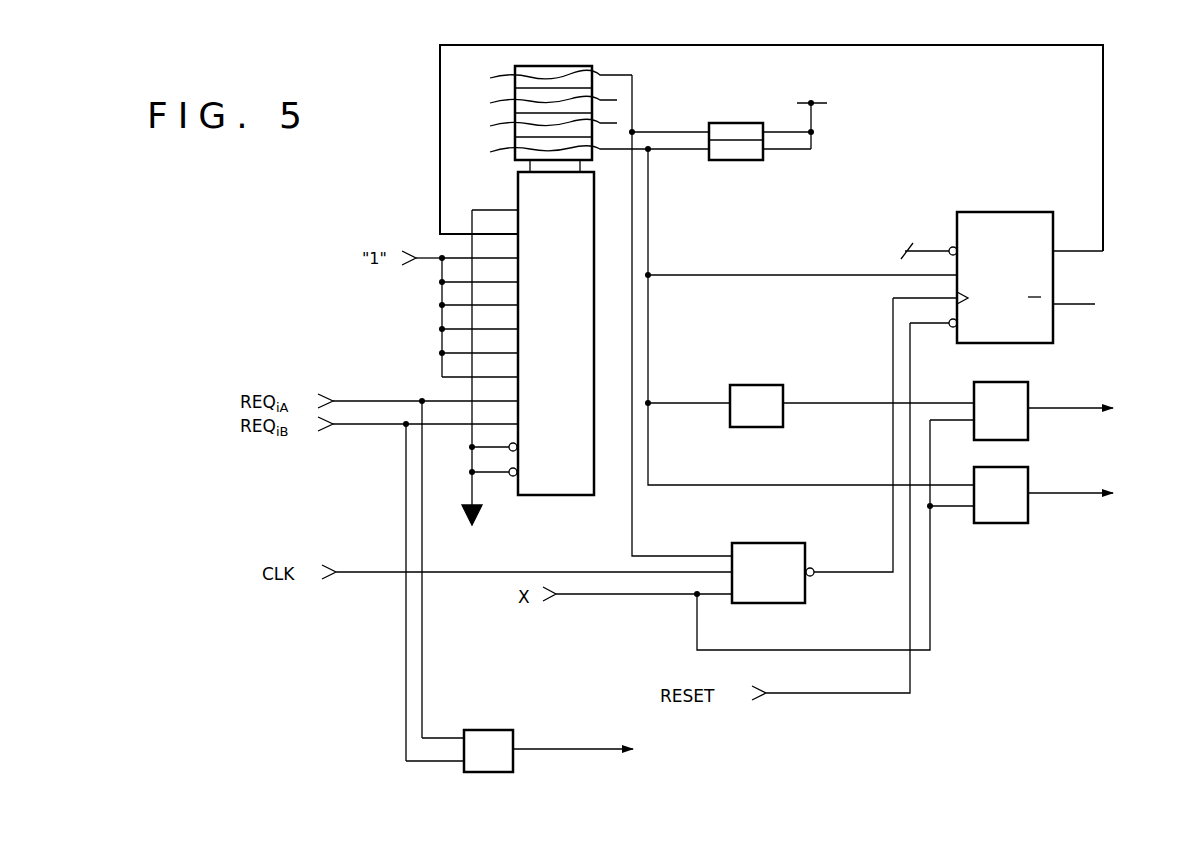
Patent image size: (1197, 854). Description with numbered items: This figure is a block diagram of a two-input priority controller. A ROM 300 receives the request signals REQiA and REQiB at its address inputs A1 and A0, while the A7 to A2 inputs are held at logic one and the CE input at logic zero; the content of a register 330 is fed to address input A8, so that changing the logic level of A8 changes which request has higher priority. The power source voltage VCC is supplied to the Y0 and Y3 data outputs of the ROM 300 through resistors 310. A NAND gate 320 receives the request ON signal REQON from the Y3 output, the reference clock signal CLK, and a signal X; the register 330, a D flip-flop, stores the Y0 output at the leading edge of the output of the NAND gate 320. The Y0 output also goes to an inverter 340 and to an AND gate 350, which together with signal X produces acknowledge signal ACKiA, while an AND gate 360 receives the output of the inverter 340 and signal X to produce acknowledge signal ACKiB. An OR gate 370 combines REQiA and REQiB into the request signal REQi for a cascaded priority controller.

The ROM 300 is at (563, 495).
The resistors 310 is at (740, 160).
The NAND gate 320 is at (768, 550).
The register 330 is at (1000, 212).
The inverter 340 is at (770, 385).
The AND gate 350 is at (990, 523).
The AND gate 360 is at (990, 388).
The OR gate 370 is at (497, 730).